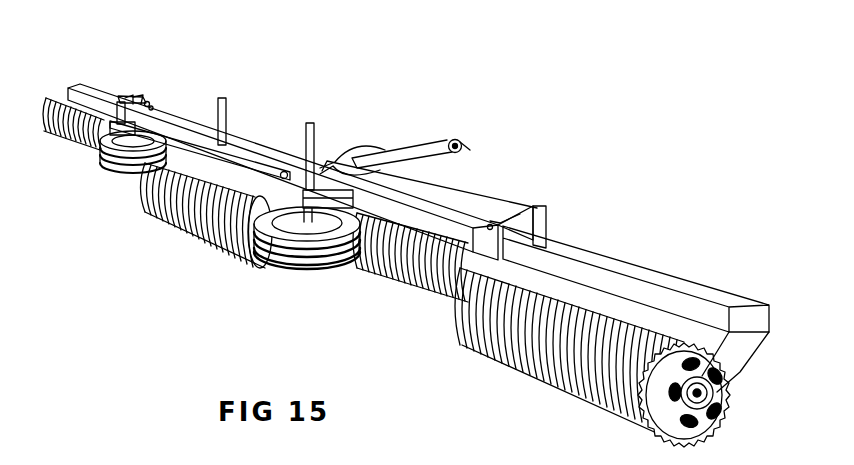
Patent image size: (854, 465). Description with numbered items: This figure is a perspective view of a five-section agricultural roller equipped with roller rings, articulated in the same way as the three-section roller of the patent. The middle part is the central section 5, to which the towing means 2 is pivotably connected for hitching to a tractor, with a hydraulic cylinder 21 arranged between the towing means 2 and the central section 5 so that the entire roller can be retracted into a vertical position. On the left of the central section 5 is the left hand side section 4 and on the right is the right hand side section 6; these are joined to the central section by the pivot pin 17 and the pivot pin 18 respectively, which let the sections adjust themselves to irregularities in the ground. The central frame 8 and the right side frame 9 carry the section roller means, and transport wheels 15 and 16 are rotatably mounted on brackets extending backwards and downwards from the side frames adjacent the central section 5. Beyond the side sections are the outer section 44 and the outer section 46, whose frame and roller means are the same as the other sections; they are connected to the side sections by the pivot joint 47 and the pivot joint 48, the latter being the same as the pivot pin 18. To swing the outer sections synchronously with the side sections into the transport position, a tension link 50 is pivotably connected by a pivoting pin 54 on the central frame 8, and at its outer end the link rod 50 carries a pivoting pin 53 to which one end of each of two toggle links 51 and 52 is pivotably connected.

The towing means 2 is at (407, 160).
The left hand side section 4 is at (190, 107).
The central section 5 is at (187, 228).
The right hand side section 6 is at (403, 288).
The central frame 8 is at (251, 158).
The right side frame 9 is at (445, 219).
The transport wheel 15 is at (123, 170).
The transport wheel 16 is at (287, 265).
The pivot pin 17 is at (221, 146).
The pivot pin 18 is at (283, 174).
The hydraulic cylinder 21 is at (347, 160).
The outer section 44 is at (80, 142).
The outer section 46 is at (531, 382).
The pivot joint 47 is at (122, 100).
The pivot joint 48 is at (482, 194).
The tension link 50 is at (150, 108).
The toggle link 51 is at (147, 104).
The toggle link 52 is at (133, 96).
The pivoting pin 53 is at (140, 96).
The pivoting pin 54 is at (399, 464).